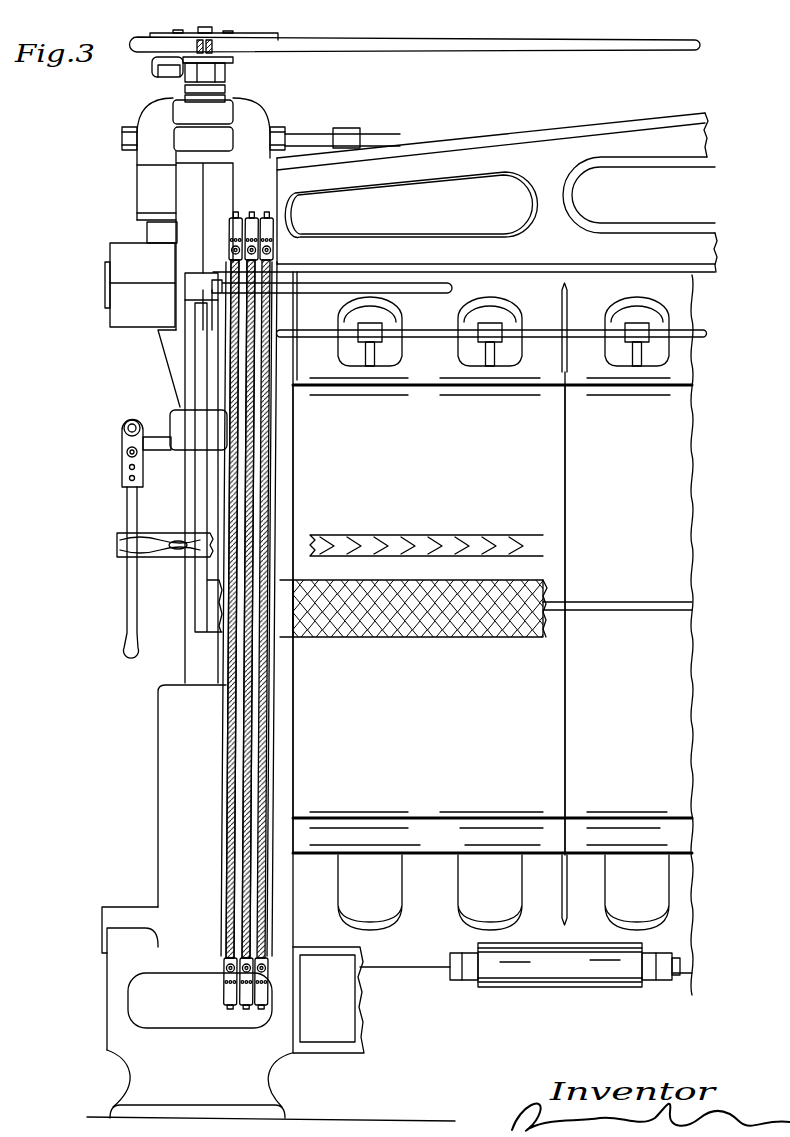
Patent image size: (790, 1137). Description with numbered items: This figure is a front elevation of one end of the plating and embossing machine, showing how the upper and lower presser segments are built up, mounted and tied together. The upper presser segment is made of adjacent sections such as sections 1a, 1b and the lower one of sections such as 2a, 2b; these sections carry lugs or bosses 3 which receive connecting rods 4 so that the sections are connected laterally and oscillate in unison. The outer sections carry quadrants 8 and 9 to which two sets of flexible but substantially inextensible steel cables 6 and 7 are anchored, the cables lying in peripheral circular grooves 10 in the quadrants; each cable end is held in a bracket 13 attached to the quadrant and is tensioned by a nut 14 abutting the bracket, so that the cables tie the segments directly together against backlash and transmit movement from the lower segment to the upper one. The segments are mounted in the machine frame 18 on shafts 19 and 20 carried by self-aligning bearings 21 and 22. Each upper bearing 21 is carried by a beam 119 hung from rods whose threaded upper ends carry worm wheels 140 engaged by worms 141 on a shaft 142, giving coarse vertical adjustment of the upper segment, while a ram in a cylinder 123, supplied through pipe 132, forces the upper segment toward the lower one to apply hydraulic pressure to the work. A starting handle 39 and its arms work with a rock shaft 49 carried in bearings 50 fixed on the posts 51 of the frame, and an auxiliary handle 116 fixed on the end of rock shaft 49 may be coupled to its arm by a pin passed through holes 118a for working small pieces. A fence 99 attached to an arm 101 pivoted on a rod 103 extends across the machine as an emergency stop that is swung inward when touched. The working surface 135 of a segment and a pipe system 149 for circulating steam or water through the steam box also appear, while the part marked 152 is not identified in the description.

The section of upper presser segment 1a is at (552, 277).
The section of upper presser segment 1b is at (691, 294).
The section of lower presser segment 2a is at (407, 958).
The section of lower presser segment 2b is at (681, 945).
The lugs or bosses 3 is at (592, 963).
The connecting rods 4 is at (685, 990).
The cables 6 is at (270, 500).
The cables 7 is at (257, 725).
The quadrant 8 is at (273, 438).
The quadrant 9 is at (273, 760).
The peripheral circular grooves 10 is at (267, 791).
The bracket 13 is at (224, 968).
The nut 14 is at (258, 990).
The machine frame 18 is at (173, 803).
The shaft 19 is at (105, 283).
The shaft 20 is at (125, 915).
The bearings 21 is at (128, 316).
The bearings 22 is at (118, 935).
The starting handle 39 is at (422, 542).
The rock shaft 49 is at (131, 418).
The bearings 50 is at (169, 434).
The posts 51 is at (193, 655).
The fence 99 is at (435, 622).
The arm 101 is at (200, 597).
The shaft or rod 103 is at (428, 286).
The auxiliary handle 116 is at (127, 606).
The holes 118a is at (126, 453).
The beam 119 is at (170, 350).
The cylinder 123 is at (252, 118).
The pipe 132 is at (311, 137).
The working surface 135 is at (601, 619).
The worm wheels 140 is at (150, 53).
The worms 141 is at (232, 60).
The shaft 142 is at (439, 51).
The pipe system 149 is at (416, 338).
The chamber 152 is at (402, 619).